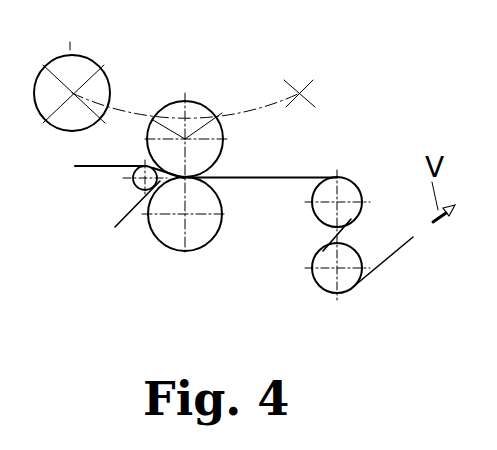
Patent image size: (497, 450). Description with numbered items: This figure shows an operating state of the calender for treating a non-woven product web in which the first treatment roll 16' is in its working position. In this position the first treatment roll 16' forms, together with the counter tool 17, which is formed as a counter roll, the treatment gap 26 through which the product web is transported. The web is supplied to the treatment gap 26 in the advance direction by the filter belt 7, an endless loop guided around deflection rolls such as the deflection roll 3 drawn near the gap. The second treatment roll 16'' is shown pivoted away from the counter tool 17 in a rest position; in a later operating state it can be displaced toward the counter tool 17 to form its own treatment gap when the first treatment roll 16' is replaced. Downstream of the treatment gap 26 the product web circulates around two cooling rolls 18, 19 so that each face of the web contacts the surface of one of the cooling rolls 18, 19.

The second treatment roll 16'' is at (72, 71).
The first treatment roll 16' is at (193, 148).
The treatment gap 26 is at (219, 173).
The deflection roll 3 is at (135, 183).
The filter belt 7 is at (124, 222).
The counter tool 17 is at (200, 238).
The cooling roll 18 is at (345, 190).
The cooling roll 19 is at (348, 282).